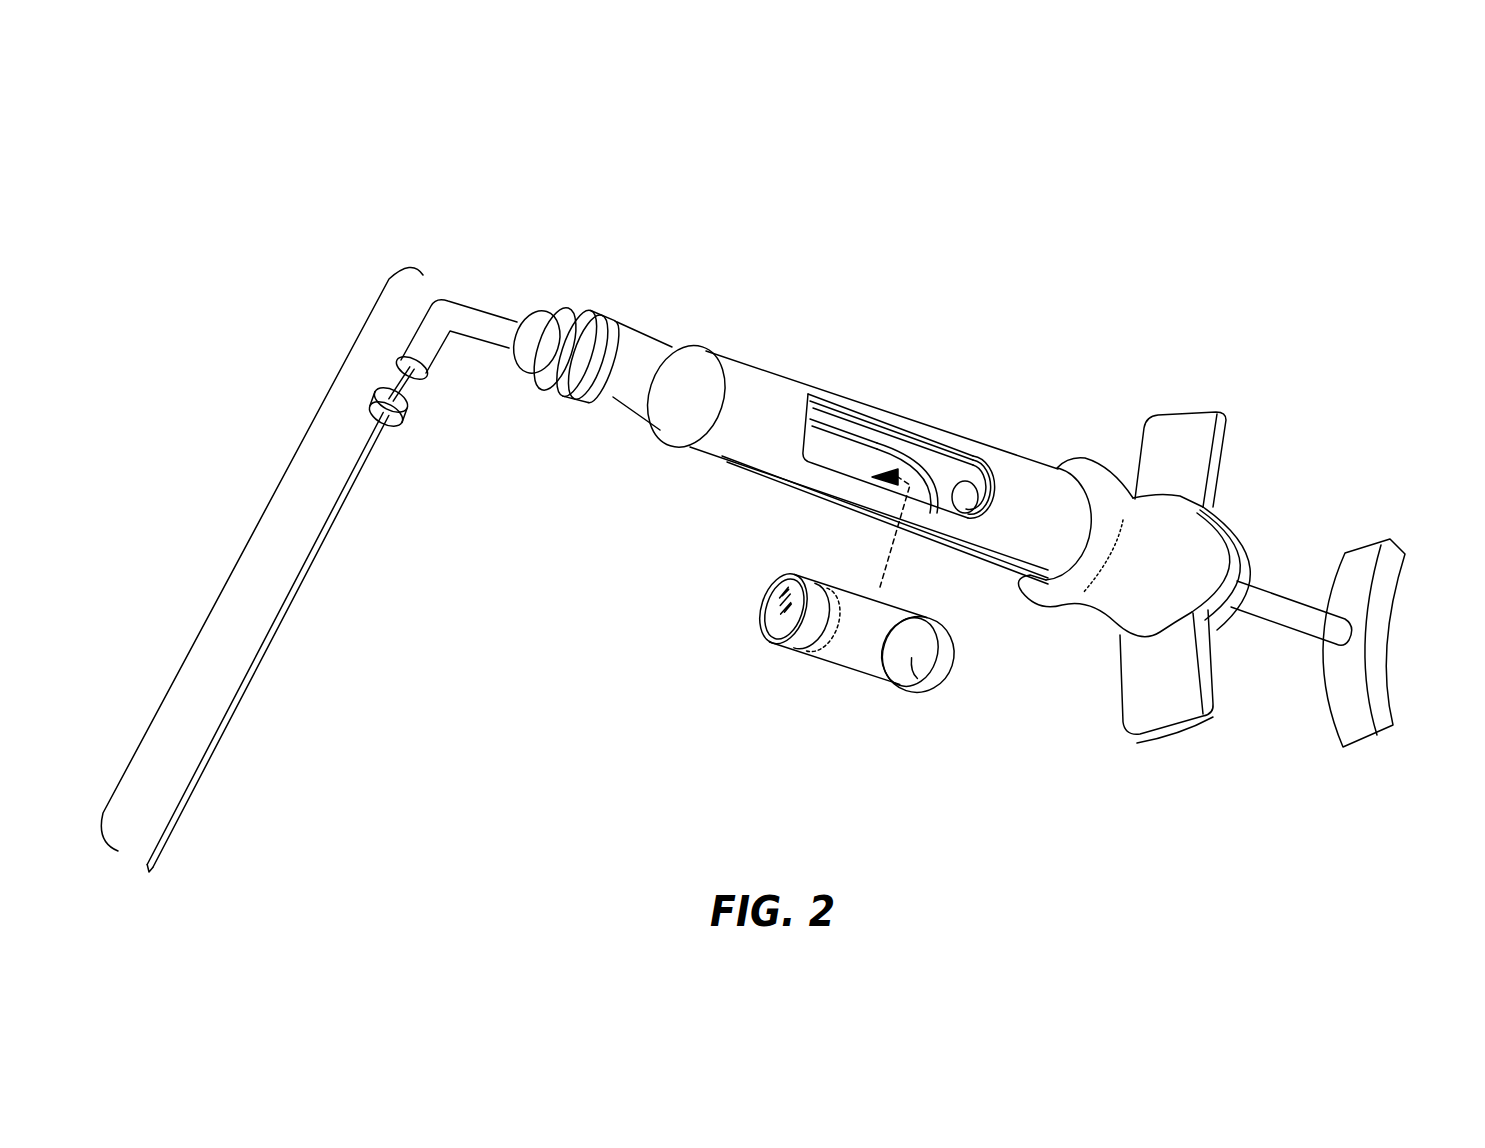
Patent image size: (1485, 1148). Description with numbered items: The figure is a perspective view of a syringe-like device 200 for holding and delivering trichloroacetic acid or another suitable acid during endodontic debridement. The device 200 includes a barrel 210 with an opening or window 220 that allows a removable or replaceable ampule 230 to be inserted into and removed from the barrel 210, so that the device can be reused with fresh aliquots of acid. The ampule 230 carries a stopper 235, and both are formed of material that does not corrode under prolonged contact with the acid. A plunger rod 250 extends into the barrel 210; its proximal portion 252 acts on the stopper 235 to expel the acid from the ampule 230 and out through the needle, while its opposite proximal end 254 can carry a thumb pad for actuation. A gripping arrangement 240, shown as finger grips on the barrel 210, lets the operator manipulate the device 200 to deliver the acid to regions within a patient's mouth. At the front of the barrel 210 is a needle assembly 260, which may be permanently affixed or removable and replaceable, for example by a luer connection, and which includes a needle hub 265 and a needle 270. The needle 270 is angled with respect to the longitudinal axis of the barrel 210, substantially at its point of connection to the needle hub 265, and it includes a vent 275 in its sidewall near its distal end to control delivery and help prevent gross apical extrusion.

The device 200 is at (635, 153).
The barrel 210 is at (757, 366).
The window 220 is at (866, 456).
The ampule 230 is at (836, 673).
The stopper 235 is at (938, 682).
The gripping arrangement 240 is at (1195, 446).
The plunger rod 250 is at (1268, 587).
The proximal portion of plunger rod 252 is at (1000, 433).
The proximal end 254 is at (1380, 647).
The needle assembly 260 is at (241, 544).
The needle hub 265 is at (547, 386).
The needle 270 is at (292, 604).
The vent 275 is at (181, 817).